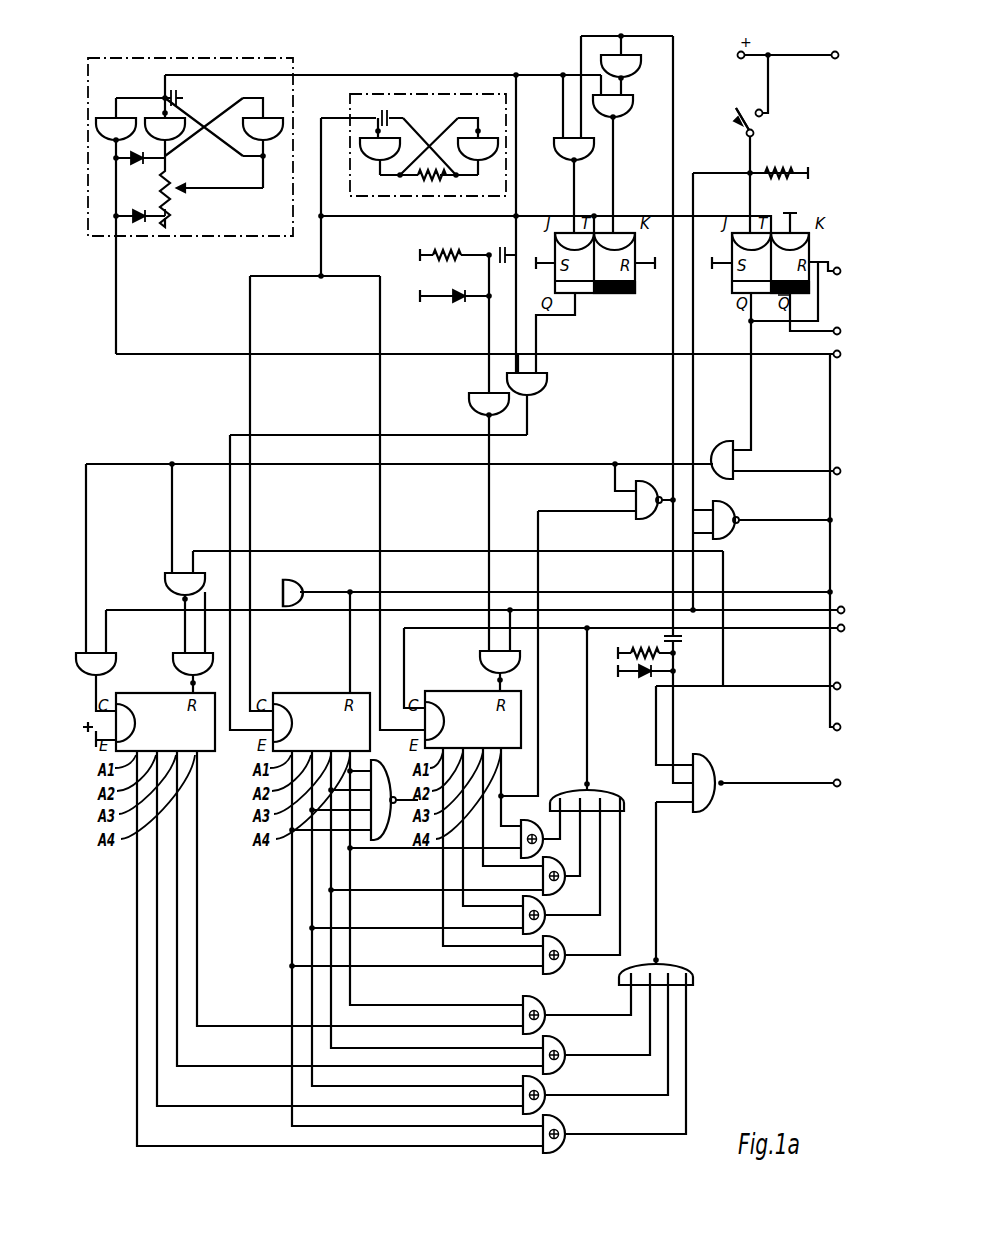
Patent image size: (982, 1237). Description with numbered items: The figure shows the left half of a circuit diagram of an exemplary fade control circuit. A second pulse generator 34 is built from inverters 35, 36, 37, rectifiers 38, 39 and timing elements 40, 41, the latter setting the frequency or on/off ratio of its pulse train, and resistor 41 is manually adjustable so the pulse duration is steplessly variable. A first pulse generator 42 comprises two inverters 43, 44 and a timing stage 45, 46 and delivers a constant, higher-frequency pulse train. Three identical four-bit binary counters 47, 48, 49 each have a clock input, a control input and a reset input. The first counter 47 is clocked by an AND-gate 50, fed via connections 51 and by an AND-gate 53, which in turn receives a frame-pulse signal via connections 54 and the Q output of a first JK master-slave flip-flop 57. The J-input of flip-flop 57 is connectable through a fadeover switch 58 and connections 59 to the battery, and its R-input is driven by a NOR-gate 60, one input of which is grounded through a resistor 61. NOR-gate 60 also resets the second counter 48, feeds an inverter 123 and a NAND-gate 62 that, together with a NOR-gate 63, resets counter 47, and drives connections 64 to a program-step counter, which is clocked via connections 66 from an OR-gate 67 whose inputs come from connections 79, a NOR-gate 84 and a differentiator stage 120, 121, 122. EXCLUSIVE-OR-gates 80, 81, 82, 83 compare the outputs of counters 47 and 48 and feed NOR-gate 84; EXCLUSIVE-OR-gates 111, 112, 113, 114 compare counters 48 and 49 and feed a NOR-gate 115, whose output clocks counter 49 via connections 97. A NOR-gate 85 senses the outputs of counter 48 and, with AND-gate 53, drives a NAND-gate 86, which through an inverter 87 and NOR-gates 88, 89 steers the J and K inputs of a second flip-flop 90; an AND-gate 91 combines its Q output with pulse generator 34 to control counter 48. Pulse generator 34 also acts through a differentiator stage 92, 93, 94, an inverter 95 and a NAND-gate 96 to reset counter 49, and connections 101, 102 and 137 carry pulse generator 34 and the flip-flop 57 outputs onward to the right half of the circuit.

The pulse generator 34 is at (298, 52).
The inverter 35 is at (101, 114).
The inverter 36 is at (177, 137).
The inverter 37 is at (280, 118).
The rectifier 38 is at (132, 162).
The rectifier 39 is at (140, 220).
The timing element 40 is at (170, 86).
The resistor 41 is at (168, 190).
The pulse generator 42 is at (440, 83).
The inverter 43 is at (349, 138).
The inverter 44 is at (494, 132).
The timing stage 45 is at (382, 106).
The timing stage 46 is at (423, 177).
The first counter 47 is at (134, 700).
The second counter 48 is at (304, 700).
The third counter 49 is at (502, 748).
The AND-gate 50 is at (92, 636).
The connections 51 is at (838, 607).
The AND-gate 53 is at (720, 442).
The connections 54 is at (832, 466).
The JK master-slave flip-flop 57 is at (728, 272).
The fadeover switch 58 is at (736, 108).
The connections 59 is at (826, 50).
The NOR-gate 60 is at (727, 512).
The resistor 61 is at (782, 166).
The NAND-gate 62 is at (180, 662).
The NOR-gate 63 is at (162, 570).
The connections 64 is at (832, 726).
The connections 66 is at (830, 784).
The OR-gate 67 is at (712, 796).
The connections 79 is at (830, 686).
The EXCLUSIVE-OR-gate 80 is at (571, 1122).
The EXCLUSIVE-OR-gate 81 is at (544, 1089).
The EXCLUSIVE-OR-gate 82 is at (564, 1044).
The EXCLUSIVE-OR-gate 83 is at (541, 1004).
The NOR-gate 84 is at (676, 970).
The NOR-gate 85 is at (382, 810).
The NAND-gate 86 is at (630, 494).
The inverter 87 is at (628, 68).
The NOR-gate 88 is at (550, 145).
The NOR-gate 89 is at (618, 112).
The JK master-slave flip-flop 90 is at (602, 292).
The AND-gate 91 is at (541, 388).
The differentiator stage 92 is at (497, 261).
The differentiator stage 93 is at (457, 250).
The differentiator stage 94 is at (456, 300).
The inverter 95 is at (466, 396).
The NAND-gate 96 is at (478, 658).
The connections 97 is at (834, 628).
The connections 101 is at (834, 335).
The connections 102 is at (834, 352).
The EXCLUSIVE-OR-gate 111 is at (564, 946).
The EXCLUSIVE-OR-gate 112 is at (542, 905).
The EXCLUSIVE-OR-gate 113 is at (558, 879).
The EXCLUSIVE-OR-gate 114 is at (532, 812).
The NOR-gate 115 is at (604, 792).
The differentiator stage 120 is at (682, 639).
The differentiator stage 121 is at (640, 644).
The differentiator stage 122 is at (642, 674).
The inverter 123 is at (300, 586).
The connections 137 is at (834, 260).